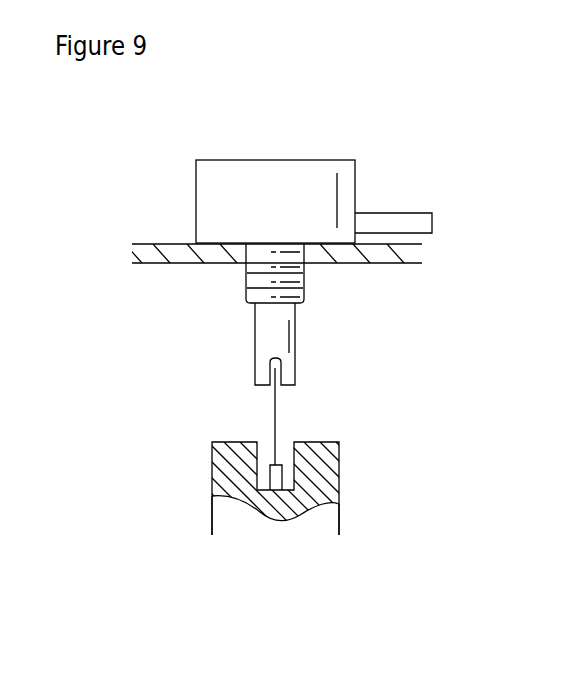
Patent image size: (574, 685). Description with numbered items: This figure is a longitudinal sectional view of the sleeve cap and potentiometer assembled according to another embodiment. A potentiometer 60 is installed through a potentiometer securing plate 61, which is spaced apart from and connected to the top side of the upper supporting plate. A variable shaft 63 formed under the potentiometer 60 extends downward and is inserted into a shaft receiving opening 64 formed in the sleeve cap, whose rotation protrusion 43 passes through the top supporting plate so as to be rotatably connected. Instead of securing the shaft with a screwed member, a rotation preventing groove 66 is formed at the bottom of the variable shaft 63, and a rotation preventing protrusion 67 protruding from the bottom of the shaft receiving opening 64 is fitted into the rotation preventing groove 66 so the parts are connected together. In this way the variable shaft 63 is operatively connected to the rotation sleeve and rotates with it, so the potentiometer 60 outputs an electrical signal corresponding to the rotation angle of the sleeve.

The potentiometer 60 is at (288, 185).
The potentiometer securing plate 61 is at (153, 255).
The variable shaft 63 is at (272, 340).
The rotation preventing groove 66 is at (275, 368).
The shaft receiving opening 64 is at (265, 453).
The rotation preventing protrusion 67 is at (277, 475).
The rotation protrusion 43 is at (277, 518).